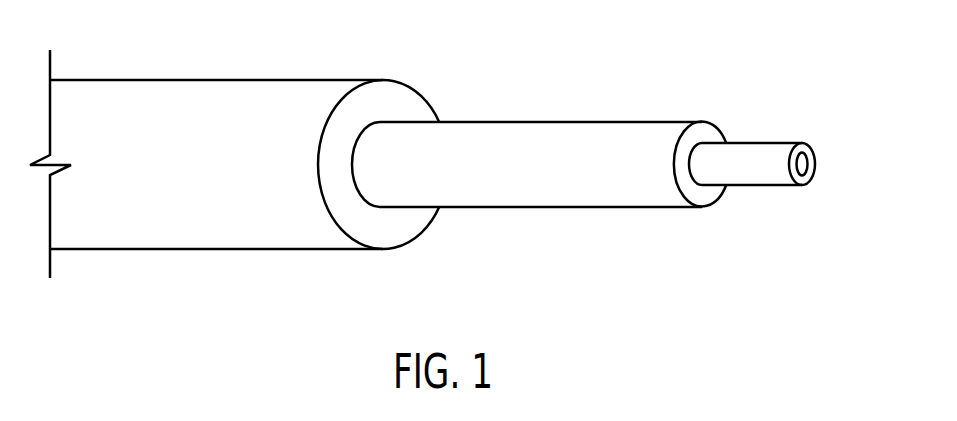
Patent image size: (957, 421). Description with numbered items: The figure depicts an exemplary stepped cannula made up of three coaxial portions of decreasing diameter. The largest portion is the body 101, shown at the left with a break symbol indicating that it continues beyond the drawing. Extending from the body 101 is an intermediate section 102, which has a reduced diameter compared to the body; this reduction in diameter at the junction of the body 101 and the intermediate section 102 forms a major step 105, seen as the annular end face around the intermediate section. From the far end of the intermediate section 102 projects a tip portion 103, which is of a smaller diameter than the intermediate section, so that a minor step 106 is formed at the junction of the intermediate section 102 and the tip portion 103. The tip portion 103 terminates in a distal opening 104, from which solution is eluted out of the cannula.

The body 101 is at (187, 80).
The intermediate section 102 is at (518, 122).
The tip portion 103 is at (762, 143).
The distal opening 104 is at (842, 172).
The major step 105 is at (385, 228).
The minor step 106 is at (703, 193).